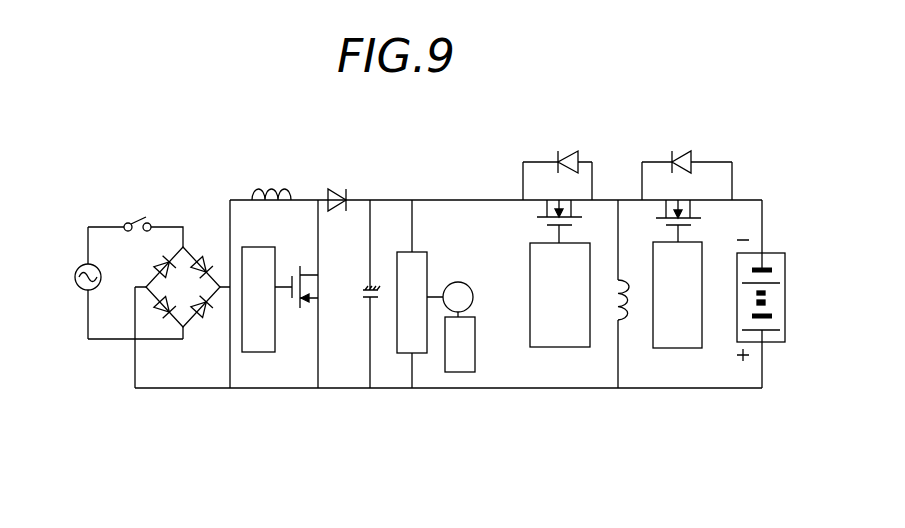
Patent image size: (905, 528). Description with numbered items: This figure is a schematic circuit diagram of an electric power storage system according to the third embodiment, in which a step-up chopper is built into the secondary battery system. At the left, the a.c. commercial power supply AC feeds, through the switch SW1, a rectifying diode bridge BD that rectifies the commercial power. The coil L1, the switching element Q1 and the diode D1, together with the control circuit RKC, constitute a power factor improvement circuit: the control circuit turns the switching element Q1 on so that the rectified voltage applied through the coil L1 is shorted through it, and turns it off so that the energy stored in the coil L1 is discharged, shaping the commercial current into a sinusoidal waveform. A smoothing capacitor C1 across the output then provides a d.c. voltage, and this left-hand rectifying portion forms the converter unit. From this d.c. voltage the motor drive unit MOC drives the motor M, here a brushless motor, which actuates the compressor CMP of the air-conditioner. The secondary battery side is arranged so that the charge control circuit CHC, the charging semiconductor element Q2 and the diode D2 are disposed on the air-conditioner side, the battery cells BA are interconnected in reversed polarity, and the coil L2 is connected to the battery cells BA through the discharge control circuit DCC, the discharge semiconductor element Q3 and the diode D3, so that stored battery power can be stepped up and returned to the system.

The a.c. commercial power supply AC is at (77, 290).
The switch SW1 is at (143, 222).
The rectifying diode bridge BD is at (154, 268).
The control circuit RKC is at (242, 313).
The coil L1 is at (271, 187).
The switching element Q1 is at (300, 308).
The diode D1 is at (340, 187).
The smoothing capacitor C1 is at (362, 293).
The motor drive unit MOC is at (418, 250).
The motor M is at (466, 284).
The compressor CMP is at (458, 413).
The charging semiconductor element Q2 is at (546, 225).
The diode D2 is at (560, 154).
The charge control circuit CHC is at (545, 347).
The coil L2 is at (630, 311).
The discharge semiconductor element Q3 is at (691, 222).
The diode D3 is at (676, 154).
The discharge control circuit DCC is at (665, 333).
The battery cells BA is at (785, 299).